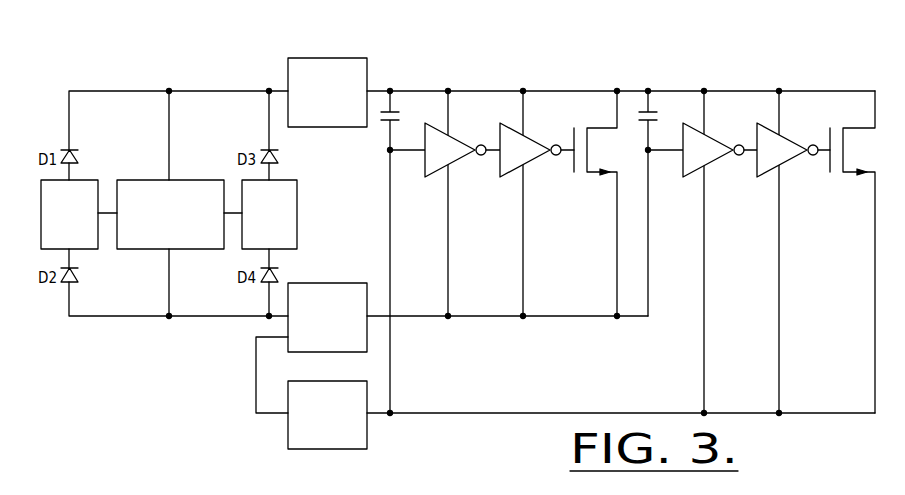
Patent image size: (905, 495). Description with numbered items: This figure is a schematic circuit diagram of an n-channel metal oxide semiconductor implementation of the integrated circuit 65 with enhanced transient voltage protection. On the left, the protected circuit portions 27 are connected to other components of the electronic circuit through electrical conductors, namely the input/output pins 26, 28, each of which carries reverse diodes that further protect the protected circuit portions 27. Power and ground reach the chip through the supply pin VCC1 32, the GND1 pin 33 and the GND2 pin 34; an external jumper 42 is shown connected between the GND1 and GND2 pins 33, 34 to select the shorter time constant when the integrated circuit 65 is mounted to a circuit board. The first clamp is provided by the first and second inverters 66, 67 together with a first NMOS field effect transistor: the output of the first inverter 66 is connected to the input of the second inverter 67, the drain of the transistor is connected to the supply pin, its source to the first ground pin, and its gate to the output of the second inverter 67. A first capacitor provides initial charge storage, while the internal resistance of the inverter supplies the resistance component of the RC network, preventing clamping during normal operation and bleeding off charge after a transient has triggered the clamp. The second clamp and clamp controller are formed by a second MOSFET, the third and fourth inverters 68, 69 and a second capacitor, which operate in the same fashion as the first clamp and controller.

The input/output pin 26 is at (242, 249).
The protected circuit portions 27 is at (178, 180).
The input/output pin 28 is at (85, 180).
The supply pin VCC1 32 is at (288, 74).
The GND1 pin 33 is at (323, 283).
The GND2 pin 34 is at (340, 450).
The external jumper 42 is at (256, 375).
The integrated circuit 65 is at (621, 216).
The first inverter 66 is at (425, 177).
The second inverter 67 is at (500, 177).
The third inverter 68 is at (683, 177).
The fourth inverter 69 is at (757, 177).